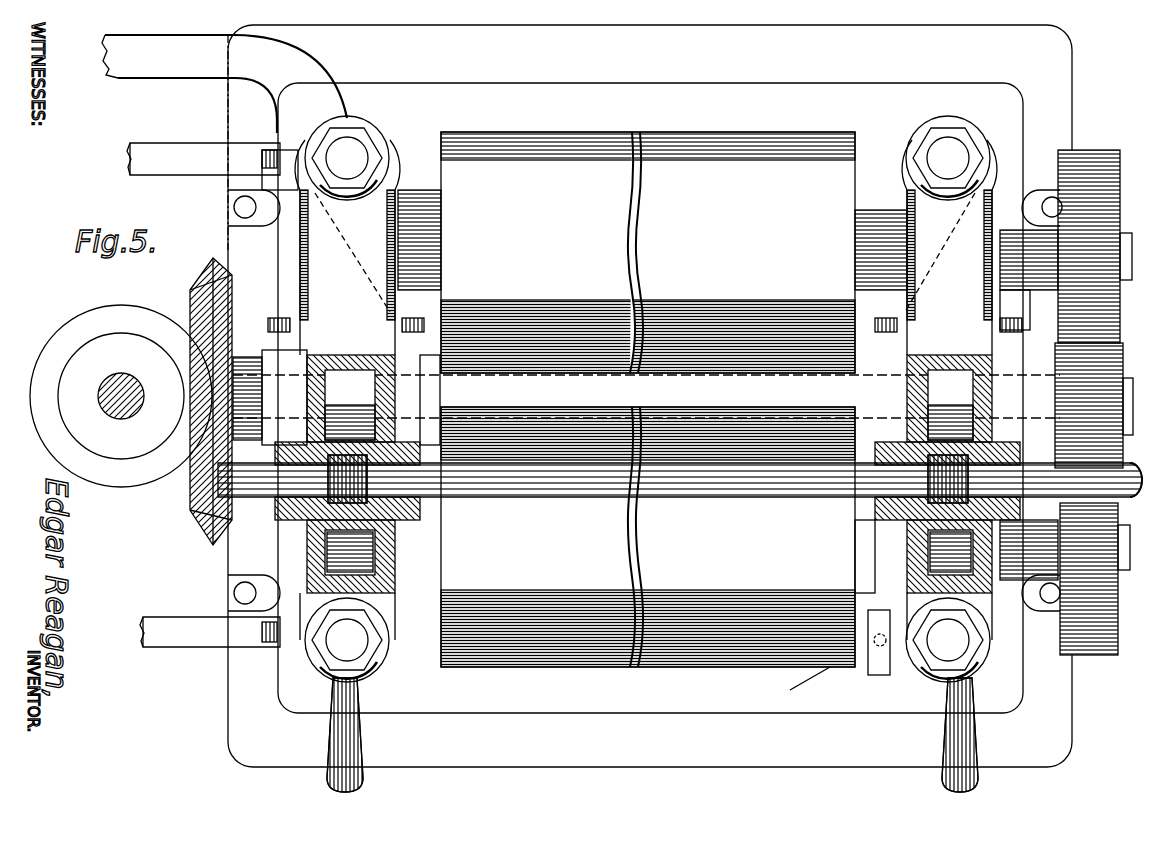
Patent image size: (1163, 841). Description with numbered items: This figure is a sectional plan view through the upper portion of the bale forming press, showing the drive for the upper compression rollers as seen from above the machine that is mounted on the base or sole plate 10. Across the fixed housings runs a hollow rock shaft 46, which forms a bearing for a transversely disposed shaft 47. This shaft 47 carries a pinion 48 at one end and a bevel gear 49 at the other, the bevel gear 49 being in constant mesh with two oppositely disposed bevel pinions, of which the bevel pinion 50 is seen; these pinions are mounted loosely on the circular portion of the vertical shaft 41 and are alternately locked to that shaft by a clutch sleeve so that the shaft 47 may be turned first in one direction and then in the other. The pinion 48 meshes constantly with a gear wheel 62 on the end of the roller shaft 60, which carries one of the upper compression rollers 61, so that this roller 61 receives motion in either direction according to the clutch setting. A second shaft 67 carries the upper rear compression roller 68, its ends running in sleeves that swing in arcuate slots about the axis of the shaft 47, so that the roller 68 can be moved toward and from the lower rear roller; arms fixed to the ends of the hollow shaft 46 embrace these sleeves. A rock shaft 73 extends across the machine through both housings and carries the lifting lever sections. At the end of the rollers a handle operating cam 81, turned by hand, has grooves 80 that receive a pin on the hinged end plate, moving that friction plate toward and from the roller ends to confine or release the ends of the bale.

The base or sole plate 10 is at (448, 762).
The vertical shaft 41 is at (110, 408).
The hollow rock shaft 46 is at (646, 345).
The transversely disposed shaft 47 is at (1135, 470).
The pinion 48 is at (1128, 340).
The bevel gear 49 is at (193, 282).
The bevel pinion 50 is at (102, 318).
The roller shaft 60 is at (1132, 225).
The upper compression roller 61 is at (652, 252).
The gear wheel 62 is at (1045, 310).
The shaft 67 is at (1040, 540).
The upper compression roller 68 is at (648, 537).
The rock shaft 73 is at (680, 480).
The grooves 80 is at (870, 675).
The handle operating cam 81 is at (945, 690).